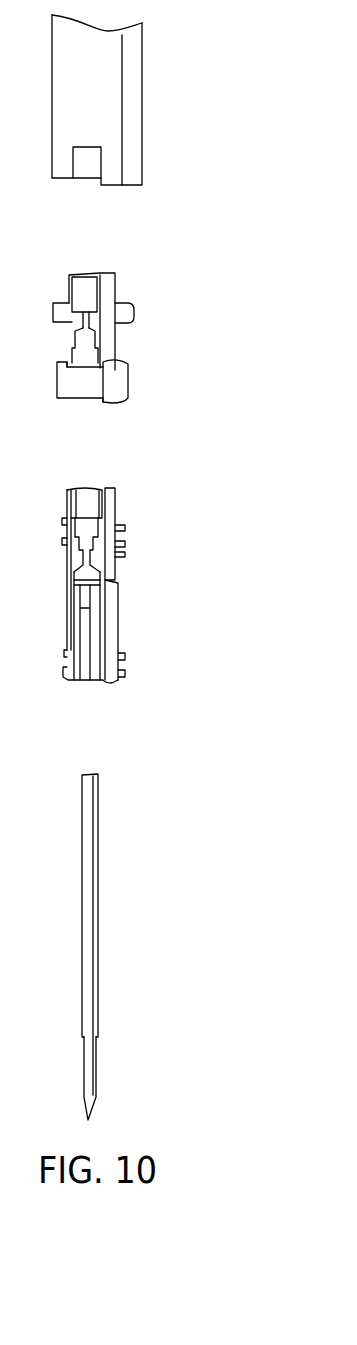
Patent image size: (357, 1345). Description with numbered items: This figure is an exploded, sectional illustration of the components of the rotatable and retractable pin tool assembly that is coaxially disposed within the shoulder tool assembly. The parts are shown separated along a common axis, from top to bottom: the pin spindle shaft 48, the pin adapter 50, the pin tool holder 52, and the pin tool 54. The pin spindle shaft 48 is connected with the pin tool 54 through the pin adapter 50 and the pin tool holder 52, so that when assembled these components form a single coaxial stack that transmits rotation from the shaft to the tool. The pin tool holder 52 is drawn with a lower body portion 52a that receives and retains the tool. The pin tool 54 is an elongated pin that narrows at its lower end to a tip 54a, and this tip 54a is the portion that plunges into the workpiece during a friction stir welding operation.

The pin spindle shaft 48 is at (102, 92).
The pin adapter 50 is at (107, 347).
The pin tool holder 52 is at (142, 585).
The contact body 52a is at (97, 647).
The pin tool 54 is at (167, 956).
The tip 54a is at (107, 1107).